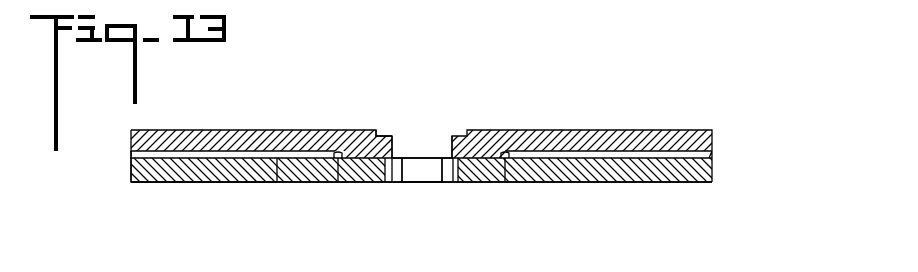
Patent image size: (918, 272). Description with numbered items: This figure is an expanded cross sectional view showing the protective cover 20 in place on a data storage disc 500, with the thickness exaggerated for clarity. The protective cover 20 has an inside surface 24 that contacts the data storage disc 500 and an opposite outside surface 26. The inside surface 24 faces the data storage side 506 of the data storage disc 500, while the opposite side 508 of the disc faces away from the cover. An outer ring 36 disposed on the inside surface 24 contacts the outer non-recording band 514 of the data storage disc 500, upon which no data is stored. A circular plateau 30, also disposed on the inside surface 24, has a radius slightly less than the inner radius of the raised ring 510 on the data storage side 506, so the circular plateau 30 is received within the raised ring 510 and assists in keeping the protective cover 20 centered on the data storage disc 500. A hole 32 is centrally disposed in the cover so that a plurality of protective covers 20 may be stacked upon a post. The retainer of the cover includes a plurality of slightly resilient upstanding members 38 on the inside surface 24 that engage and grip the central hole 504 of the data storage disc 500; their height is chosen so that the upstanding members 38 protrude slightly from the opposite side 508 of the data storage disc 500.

The protective cover 20 is at (720, 110).
The inside surface 24 is at (277, 152).
The outside surface 26 is at (537, 130).
The circular plateau 30 is at (377, 132).
The hole 32 is at (430, 143).
The outer ring 36 is at (133, 157).
The upstanding members 38 is at (402, 168).
The data storage disc 500 is at (723, 191).
The central hole 504 is at (423, 172).
The data storage side 506 is at (628, 158).
The opposite side 508 is at (535, 182).
The raised ring 510 is at (339, 182).
The outer non-recording band 514 is at (134, 160).